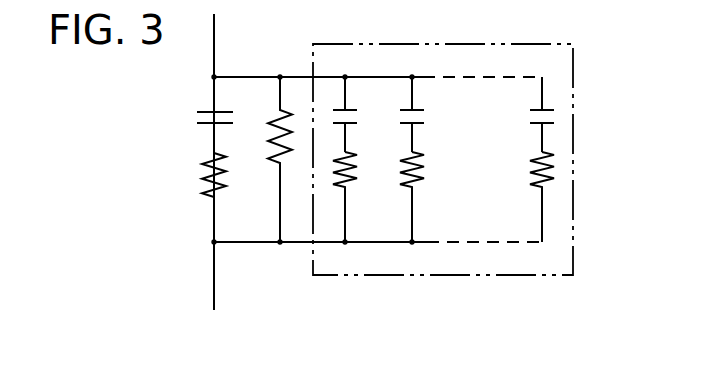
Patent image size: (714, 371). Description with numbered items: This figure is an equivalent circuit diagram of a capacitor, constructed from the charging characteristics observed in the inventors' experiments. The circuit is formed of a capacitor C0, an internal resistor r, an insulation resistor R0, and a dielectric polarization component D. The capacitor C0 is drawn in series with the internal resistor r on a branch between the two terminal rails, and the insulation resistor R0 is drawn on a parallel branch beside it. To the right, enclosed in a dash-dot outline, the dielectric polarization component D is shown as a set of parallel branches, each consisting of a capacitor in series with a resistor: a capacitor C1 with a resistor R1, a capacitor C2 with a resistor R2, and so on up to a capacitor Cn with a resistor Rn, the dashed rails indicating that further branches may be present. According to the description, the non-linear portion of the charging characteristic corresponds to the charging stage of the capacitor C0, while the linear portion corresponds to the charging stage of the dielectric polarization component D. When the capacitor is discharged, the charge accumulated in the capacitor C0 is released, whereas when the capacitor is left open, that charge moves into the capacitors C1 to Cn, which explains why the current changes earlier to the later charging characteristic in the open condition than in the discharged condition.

The dielectric polarization component D is at (573, 82).
The capacitor C0 is at (197, 115).
The internal resistor r is at (196, 197).
The insulation resistor R0 is at (263, 159).
The capacitor C1 is at (361, 114).
The resistor R1 is at (361, 197).
The capacitor C2 is at (429, 114).
The resistor R2 is at (429, 197).
The capacitor Cn is at (524, 114).
The resistor Rn is at (523, 197).